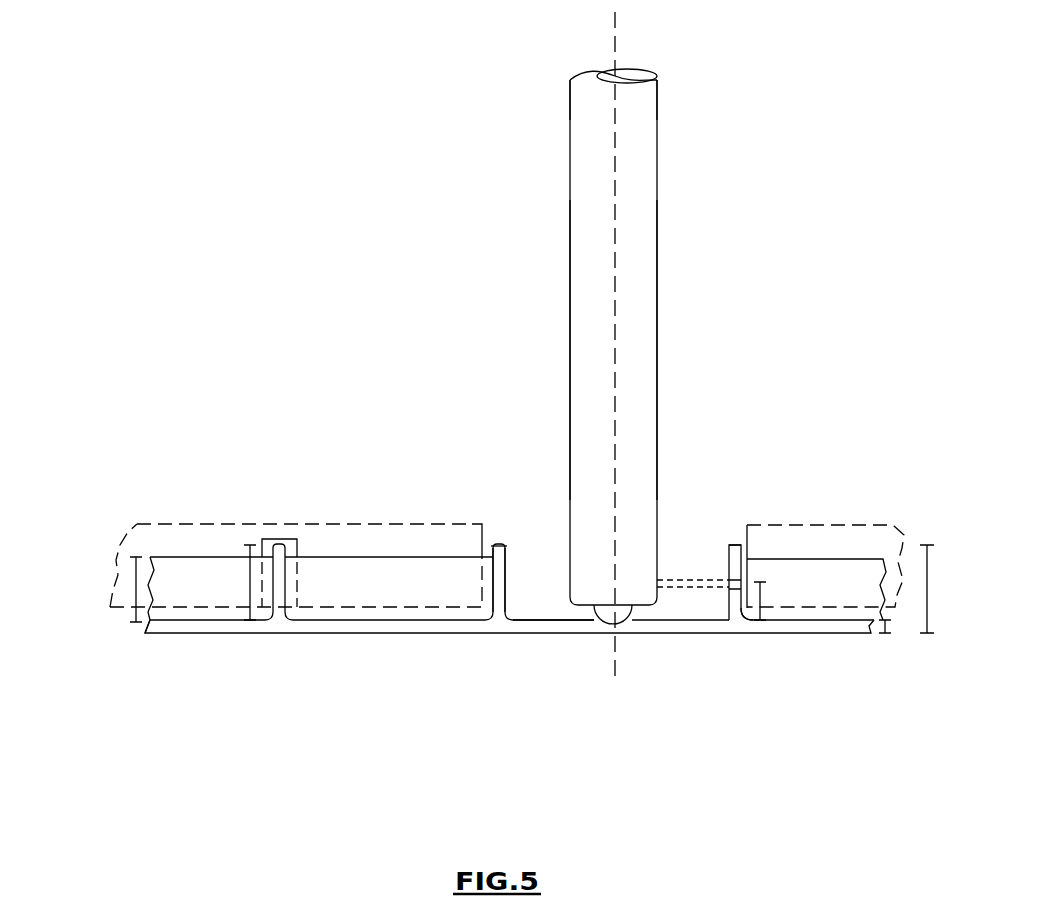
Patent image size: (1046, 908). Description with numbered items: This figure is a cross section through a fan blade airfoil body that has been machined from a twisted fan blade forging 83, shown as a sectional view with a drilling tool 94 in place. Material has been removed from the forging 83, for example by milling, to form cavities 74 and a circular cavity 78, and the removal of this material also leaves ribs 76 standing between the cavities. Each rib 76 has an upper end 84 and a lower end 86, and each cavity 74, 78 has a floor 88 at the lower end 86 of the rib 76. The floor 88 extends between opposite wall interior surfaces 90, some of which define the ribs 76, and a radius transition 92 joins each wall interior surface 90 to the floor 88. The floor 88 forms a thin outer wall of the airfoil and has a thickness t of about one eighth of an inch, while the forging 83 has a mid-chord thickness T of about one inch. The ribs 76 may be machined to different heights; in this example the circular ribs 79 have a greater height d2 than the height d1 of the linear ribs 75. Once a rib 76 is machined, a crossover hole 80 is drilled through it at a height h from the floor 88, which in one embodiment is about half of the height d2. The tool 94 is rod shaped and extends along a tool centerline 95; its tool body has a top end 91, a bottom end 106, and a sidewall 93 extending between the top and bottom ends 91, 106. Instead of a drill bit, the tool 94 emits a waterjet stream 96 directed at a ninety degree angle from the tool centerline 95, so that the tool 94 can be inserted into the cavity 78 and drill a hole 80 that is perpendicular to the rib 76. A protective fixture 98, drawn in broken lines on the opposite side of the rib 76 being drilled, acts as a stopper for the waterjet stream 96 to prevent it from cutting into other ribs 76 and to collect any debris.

The tool centerline 95 is at (615, 52).
The sidewall 93 is at (660, 148).
The tool 94 is at (640, 297).
The top end 91 is at (548, 90).
The bottom end 106 is at (558, 582).
The circular cavity 78 is at (534, 575).
The circular rib 79 is at (282, 540).
The cavity 74 is at (310, 540).
The protective fixture 98 is at (360, 538).
The linear rib 75 is at (175, 565).
The twisted fan blade forging 83 is at (110, 627).
The wall interior surface 90 is at (506, 583).
The radius transition 92 is at (507, 625).
The floor 88 is at (683, 625).
The lower end 86 is at (730, 608).
The upper end 84 is at (733, 546).
The rib 76 is at (740, 546).
The crossover hole 80 is at (728, 592).
The waterjet stream 96 is at (674, 580).
The height of the linear ribs d1 is at (133, 575).
The height of the circular ribs d2 is at (248, 580).
The height of the crossover hole h is at (768, 603).
The mid-chord thickness T is at (930, 590).
The floor thickness t is at (880, 632).